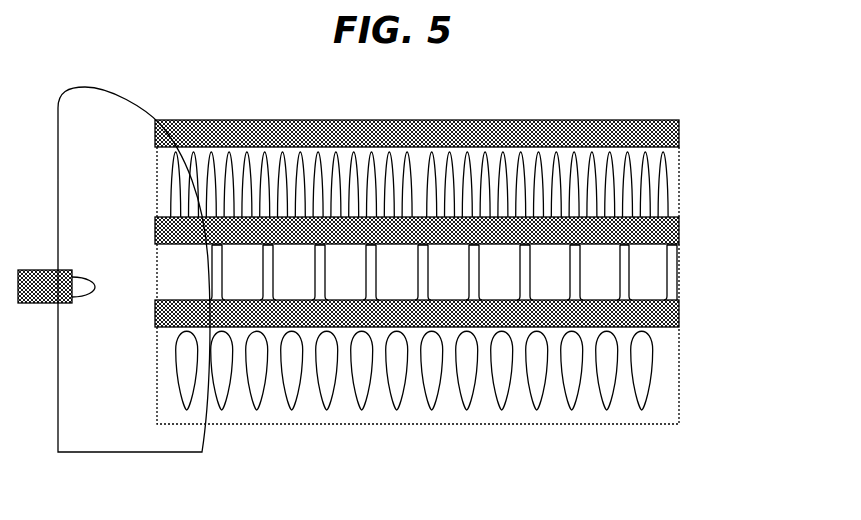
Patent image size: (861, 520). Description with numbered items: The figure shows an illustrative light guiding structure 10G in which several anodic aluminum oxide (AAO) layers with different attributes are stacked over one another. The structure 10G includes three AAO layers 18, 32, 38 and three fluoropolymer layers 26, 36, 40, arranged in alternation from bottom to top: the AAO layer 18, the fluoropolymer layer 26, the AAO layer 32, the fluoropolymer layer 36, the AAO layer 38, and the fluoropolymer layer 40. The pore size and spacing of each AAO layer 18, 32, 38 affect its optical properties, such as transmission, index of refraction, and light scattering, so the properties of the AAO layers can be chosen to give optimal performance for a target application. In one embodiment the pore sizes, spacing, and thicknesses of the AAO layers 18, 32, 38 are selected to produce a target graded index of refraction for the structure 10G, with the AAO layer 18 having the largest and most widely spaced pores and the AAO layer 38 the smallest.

The light guiding structure 10G is at (672, 88).
The fluoropolymer layer 40 is at (705, 137).
The AAO layer 38 is at (703, 186).
The fluoropolymer layer 36 is at (705, 235).
The AAO layer 32 is at (703, 273).
The fluoropolymer layer 26 is at (705, 318).
The AAO layer 18 is at (703, 378).